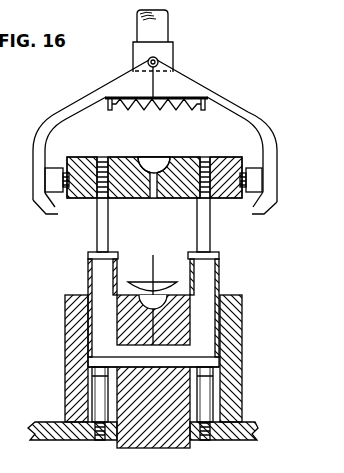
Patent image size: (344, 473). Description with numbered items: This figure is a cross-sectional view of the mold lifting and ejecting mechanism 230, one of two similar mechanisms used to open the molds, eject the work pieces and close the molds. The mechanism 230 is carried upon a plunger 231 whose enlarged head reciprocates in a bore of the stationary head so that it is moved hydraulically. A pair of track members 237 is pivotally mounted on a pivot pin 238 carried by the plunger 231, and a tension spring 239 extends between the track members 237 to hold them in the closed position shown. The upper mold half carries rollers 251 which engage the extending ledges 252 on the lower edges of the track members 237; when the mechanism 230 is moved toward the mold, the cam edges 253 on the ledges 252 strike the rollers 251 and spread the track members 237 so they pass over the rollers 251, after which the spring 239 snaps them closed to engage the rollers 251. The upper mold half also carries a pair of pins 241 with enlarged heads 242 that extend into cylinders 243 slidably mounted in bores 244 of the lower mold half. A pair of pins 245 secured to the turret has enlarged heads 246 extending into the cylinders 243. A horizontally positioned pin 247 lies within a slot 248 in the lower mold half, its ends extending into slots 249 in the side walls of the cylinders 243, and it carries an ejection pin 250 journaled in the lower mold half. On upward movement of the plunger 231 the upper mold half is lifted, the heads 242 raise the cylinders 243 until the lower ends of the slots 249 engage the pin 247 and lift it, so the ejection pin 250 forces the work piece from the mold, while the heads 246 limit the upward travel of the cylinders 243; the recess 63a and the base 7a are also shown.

The plunger 231 is at (168, 22).
The mold lifting and ejecting mechanism 230 is at (205, 82).
The pivot pin 238 is at (159, 60).
The track members 237 is at (95, 90).
The tension spring 239 is at (156, 117).
The socket recess 63a is at (185, 164).
The rollers 251 is at (56, 167).
The extending ledges 252 is at (35, 212).
The cam edges 253 is at (50, 201).
The pins 241 is at (97, 227).
The enlarged heads 242 is at (88, 258).
The cylinders 243 is at (88, 277).
The slots 249 is at (116, 290).
The ejection pin 250 is at (160, 297).
The horizontally positioned pin 247 is at (90, 363).
The enlarged heads 246 is at (99, 357).
The slot 248 is at (194, 373).
The bores 244 is at (96, 386).
The pins 245 is at (100, 407).
The base 7a is at (241, 440).